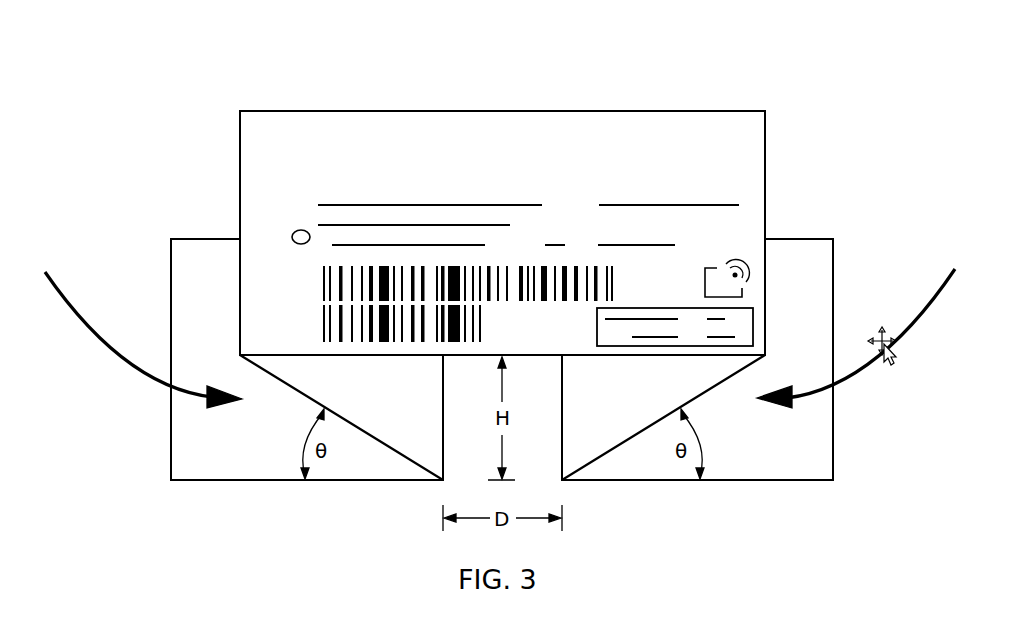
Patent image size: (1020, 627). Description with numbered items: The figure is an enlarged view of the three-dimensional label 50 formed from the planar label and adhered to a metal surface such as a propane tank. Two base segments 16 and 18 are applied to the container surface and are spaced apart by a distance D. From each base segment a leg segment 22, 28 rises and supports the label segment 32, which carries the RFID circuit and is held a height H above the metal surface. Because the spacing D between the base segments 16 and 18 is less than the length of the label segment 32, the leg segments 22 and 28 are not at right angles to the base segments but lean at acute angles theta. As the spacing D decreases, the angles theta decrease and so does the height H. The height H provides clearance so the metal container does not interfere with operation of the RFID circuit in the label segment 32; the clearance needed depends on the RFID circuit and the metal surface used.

The base segment 16 is at (259, 466).
The base segment 18 is at (747, 465).
The leg segment 22 is at (411, 449).
The leg segment 28 is at (592, 446).
The label segment 32 is at (568, 128).
The label 50 is at (687, 88).